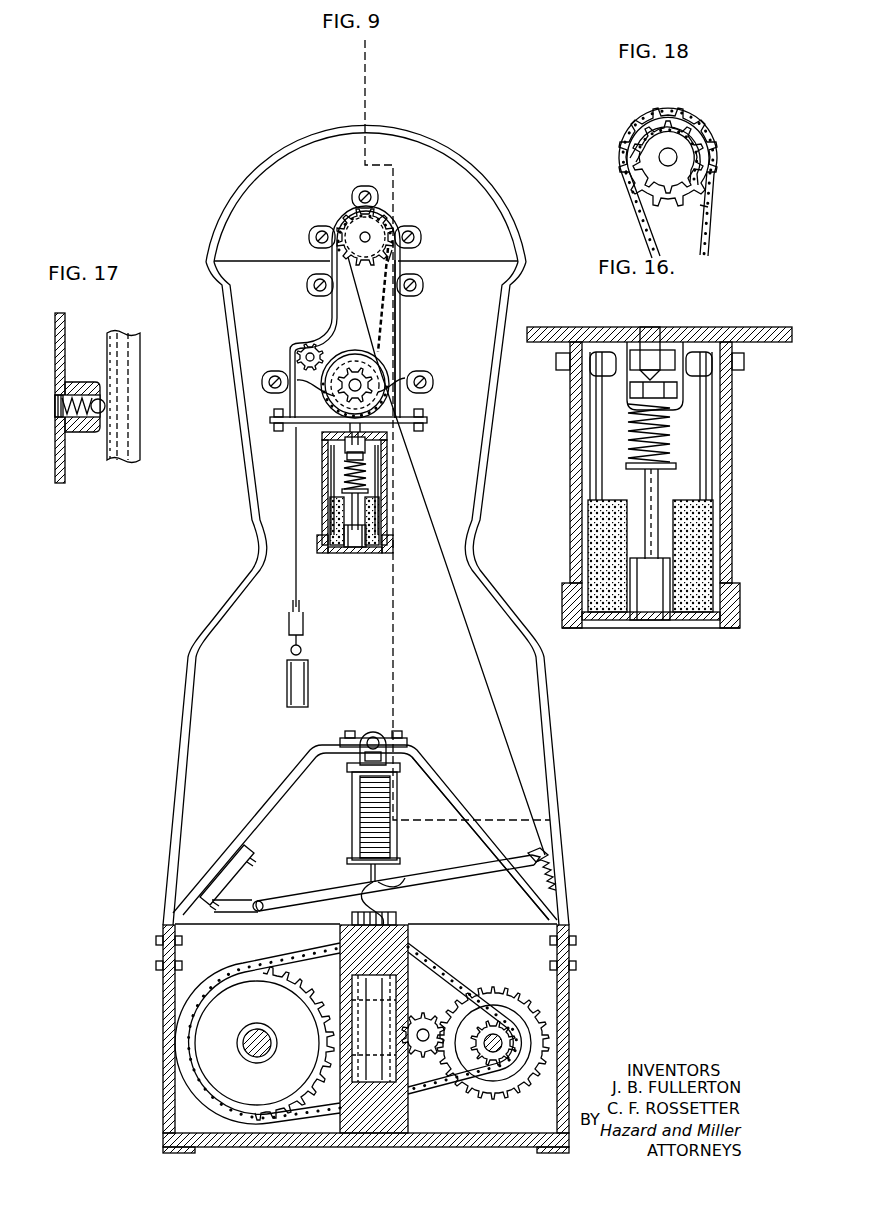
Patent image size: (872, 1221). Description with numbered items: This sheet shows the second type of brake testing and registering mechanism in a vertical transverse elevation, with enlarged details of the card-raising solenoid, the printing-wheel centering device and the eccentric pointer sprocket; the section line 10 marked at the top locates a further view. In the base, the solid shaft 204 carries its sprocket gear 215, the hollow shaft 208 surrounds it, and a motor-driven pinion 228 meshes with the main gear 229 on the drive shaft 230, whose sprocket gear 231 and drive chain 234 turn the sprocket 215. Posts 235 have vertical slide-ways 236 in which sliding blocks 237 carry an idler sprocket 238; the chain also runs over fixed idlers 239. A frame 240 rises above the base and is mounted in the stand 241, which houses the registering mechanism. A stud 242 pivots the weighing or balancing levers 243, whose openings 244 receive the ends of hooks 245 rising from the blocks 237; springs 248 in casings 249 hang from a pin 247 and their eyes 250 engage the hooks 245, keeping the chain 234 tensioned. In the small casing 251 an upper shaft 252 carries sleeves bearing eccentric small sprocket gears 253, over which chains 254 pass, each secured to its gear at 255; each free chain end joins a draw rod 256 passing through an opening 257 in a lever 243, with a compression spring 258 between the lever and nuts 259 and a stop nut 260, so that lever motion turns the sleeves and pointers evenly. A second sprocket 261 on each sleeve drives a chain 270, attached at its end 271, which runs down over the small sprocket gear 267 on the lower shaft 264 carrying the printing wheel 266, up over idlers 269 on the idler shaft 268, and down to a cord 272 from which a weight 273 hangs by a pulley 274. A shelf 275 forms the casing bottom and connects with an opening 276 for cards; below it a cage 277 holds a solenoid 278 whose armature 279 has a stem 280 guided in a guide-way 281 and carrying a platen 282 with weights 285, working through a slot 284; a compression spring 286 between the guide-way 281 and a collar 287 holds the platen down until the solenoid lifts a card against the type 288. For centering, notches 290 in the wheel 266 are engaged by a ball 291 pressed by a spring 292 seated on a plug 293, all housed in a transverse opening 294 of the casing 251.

In FIG. 9, the apparatus housing 10 is at (367, 66).
In FIG. 9, the solid shaft 204 is at (243, 1042).
In FIG. 9, the hollow shaft 208 is at (163, 1010).
In FIG. 9, the sprocket gear 215 is at (208, 1074).
In FIG. 9, the pinion 228 is at (480, 998).
In FIG. 9, the main gear 229 is at (568, 1042).
In FIG. 9, the drive shaft 230 is at (500, 1060).
In FIG. 9, the sprocket gear 231 is at (480, 1058).
In FIG. 9, the drive chain 234 is at (450, 985).
In FIG. 9, the posts 235 is at (343, 1118).
In FIG. 9, the vertical slide-way 236 is at (425, 1000).
In FIG. 9, the sliding blocks 237 is at (340, 916).
In FIG. 9, the idler sprocket 238 is at (350, 952).
In FIG. 9, the idlers 239 is at (423, 1047).
In FIG. 9, the frame 240 is at (290, 764).
In FIG. 9, the stand 241 is at (182, 735).
In FIG. 9, the stud 242 is at (245, 890).
In FIG. 9, the weighing or balancing levers 243 is at (463, 866).
In FIG. 9, the opening 244 is at (398, 882).
In FIG. 9, the hooks 245 is at (396, 883).
In FIG. 9, the pin 247 is at (374, 738).
In FIG. 9, the springs 248 is at (397, 800).
In FIG. 9, the casings 249 is at (352, 810).
In FIG. 9, the eyes 250 is at (368, 873).
In FIG. 9, the small casing 251 is at (398, 330).
In FIG. 9, the upper shaft 252 is at (372, 235).
In FIG. 18, the upper shaft 252 is at (674, 153).
In FIG. 9, the small sprocket gears 253 is at (392, 256).
In FIG. 18, the small sprocket gears 253 is at (706, 190).
In FIG. 9, the chains 254 is at (340, 236).
In FIG. 18, the chains 254 is at (626, 158).
In FIG. 9, the chain attachment point 255 is at (395, 232).
In FIG. 18, the chain attachment point 255 is at (714, 147).
In FIG. 9, the draw rod 256 is at (433, 500).
In FIG. 18, the draw rod 256 is at (651, 252).
In FIG. 9, the opening 257 is at (546, 860).
In FIG. 9, the compression springs 258 is at (556, 872).
In FIG. 9, the nuts 259 is at (562, 888).
In FIG. 9, the stop nut 260 is at (542, 852).
In FIG. 9, the second sprocket 261 is at (400, 256).
In FIG. 18, the second sprocket 261 is at (706, 210).
In FIG. 9, the lower shaft 264 is at (365, 385).
In FIG. 9, the printing wheel or disc 266 is at (385, 412).
In FIG. 9, the small sprocket gear 267 is at (320, 331).
In FIG. 9, the idler shaft 268 is at (300, 366).
In FIG. 9, the idler sprockets 269 is at (305, 358).
In FIG. 9, the sprocket chains 270 is at (382, 316).
In FIG. 18, the sprocket chains 270 is at (712, 246).
In FIG. 9, the chain end 271 is at (346, 210).
In FIG. 18, the chain end 271 is at (640, 120).
In FIG. 9, the cord 272 is at (294, 500).
In FIG. 9, the weight 273 is at (309, 672).
In FIG. 9, the pulley 274 is at (306, 612).
In FIG. 9, the shelf 275 is at (392, 441).
In FIG. 16, the shelf 275 is at (770, 335).
In FIG. 9, the opening 276 is at (322, 434).
In FIG. 9, the cage 277 is at (324, 490).
In FIG. 16, the cage 277 is at (733, 500).
In FIG. 9, the solenoid 278 is at (334, 510).
In FIG. 16, the solenoid 278 is at (712, 565).
In FIG. 9, the armature 279 is at (355, 540).
In FIG. 16, the armature 279 is at (655, 600).
In FIG. 9, the stem 280 is at (362, 488).
In FIG. 16, the stem 280 is at (660, 495).
In FIG. 9, the guide-way 281 is at (368, 462).
In FIG. 16, the guide-way 281 is at (690, 398).
In FIG. 9, the platen 282 is at (375, 433).
In FIG. 16, the platen 282 is at (651, 357).
In FIG. 16, the slot 284 is at (645, 328).
In FIG. 16, the weights 285 is at (627, 380).
In FIG. 9, the compression spring 286 is at (330, 468).
In FIG. 16, the compression spring 286 is at (628, 442).
In FIG. 9, the collar 287 is at (332, 496).
In FIG. 16, the collar 287 is at (622, 470).
In FIG. 9, the type 288 is at (293, 418).
In FIG. 17, the notches 290 is at (108, 358).
In FIG. 17, the ball 291 is at (105, 408).
In FIG. 17, the spring 292 is at (72, 433).
In FIG. 17, the plug 293 is at (57, 405).
In FIG. 17, the transverse opening 294 is at (80, 394).